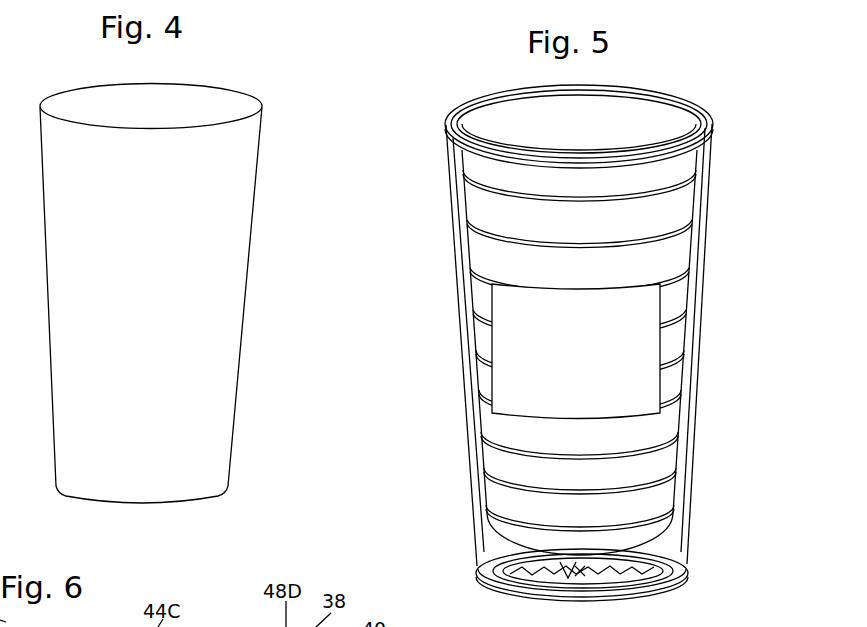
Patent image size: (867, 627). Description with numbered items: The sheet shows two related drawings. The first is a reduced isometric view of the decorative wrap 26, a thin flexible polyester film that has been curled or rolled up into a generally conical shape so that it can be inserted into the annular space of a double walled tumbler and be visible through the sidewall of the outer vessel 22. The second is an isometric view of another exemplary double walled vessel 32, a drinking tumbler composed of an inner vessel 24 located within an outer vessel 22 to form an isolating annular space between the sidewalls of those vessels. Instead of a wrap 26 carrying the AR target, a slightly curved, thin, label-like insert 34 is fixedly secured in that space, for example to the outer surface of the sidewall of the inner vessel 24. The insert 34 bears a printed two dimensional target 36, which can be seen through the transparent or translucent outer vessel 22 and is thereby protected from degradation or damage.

In FIG. 5, the outer vessel 22 is at (462, 437).
In FIG. 5, the inner vessel 24 is at (677, 193).
In FIG. 4, the decorative wrap 26 is at (207, 273).
In FIG. 5, the double walled vessel 32 is at (447, 122).
In FIG. 5, the insert 34 is at (513, 392).
In FIG. 5, the two dimensional (2D) target 36 is at (553, 347).